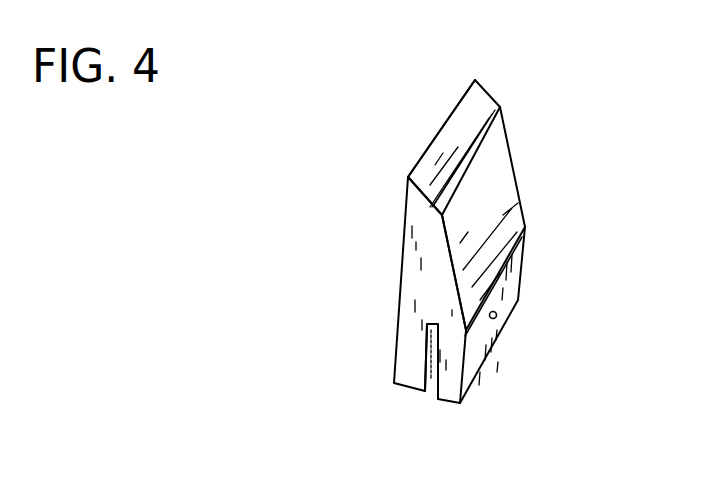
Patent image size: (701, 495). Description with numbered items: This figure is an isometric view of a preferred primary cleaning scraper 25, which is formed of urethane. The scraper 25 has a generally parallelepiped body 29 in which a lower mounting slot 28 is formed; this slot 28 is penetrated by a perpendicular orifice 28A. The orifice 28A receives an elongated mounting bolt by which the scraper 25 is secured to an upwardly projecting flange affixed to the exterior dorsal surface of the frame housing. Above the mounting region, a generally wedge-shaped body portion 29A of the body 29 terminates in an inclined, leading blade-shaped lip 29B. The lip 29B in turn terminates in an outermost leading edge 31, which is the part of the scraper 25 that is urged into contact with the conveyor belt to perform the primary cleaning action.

The primary cleaning scraper 25 is at (534, 202).
The lower mounting slot 28 is at (427, 386).
The perpendicular orifice 28A is at (497, 313).
The parallelepiped body 29 is at (453, 205).
The wedge-shaped body portion 29A is at (514, 165).
The blade-shaped lip 29B is at (443, 131).
The leading edge 31 is at (462, 98).